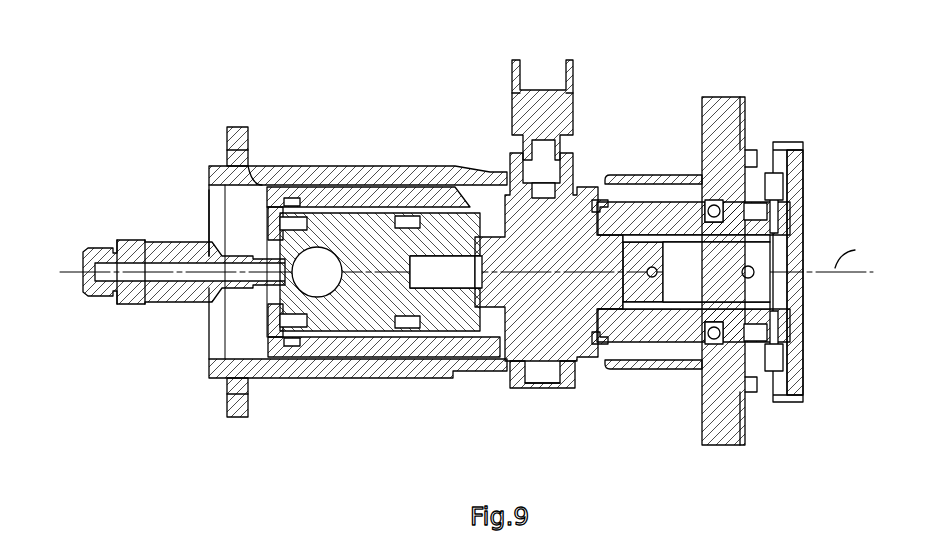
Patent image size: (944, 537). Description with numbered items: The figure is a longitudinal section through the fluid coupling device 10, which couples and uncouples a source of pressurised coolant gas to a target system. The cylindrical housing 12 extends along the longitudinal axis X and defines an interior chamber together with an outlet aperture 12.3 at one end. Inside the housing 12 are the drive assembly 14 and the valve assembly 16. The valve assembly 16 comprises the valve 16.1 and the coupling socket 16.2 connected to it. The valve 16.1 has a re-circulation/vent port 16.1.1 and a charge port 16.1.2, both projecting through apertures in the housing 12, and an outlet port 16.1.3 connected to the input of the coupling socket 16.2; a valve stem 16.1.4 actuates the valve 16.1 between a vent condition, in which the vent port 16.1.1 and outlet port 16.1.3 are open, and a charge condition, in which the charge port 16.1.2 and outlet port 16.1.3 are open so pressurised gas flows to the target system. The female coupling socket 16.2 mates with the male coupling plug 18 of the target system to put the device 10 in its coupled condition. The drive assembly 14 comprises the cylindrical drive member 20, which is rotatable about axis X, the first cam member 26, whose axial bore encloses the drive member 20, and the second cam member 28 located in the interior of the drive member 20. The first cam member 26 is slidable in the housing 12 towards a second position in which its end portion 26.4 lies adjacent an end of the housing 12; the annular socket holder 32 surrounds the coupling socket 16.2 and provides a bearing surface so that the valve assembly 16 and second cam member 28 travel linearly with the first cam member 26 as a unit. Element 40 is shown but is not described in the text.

The fluid coupling device 10 is at (805, 88).
The housing 12 is at (305, 378).
The outlet aperture 12.3 is at (203, 233).
The drive assembly 14 is at (243, 342).
The valve assembly 16 is at (483, 213).
The valve 16.1 is at (556, 195).
The re-circulation/vent port 16.1.1 is at (579, 70).
The charge port 16.1.2 is at (562, 391).
The outlet port 16.1.3 is at (500, 283).
The valve stem 16.1.4 is at (655, 280).
The coupling socket 16.2 is at (348, 235).
The male coupling plug 18 is at (132, 243).
The cylindrical drive member 20 is at (681, 205).
The first cam member 26 is at (400, 195).
The end portion 26.4 is at (261, 217).
The second cam member 28 is at (776, 212).
The socket holder 32 is at (380, 330).
The seal ring 40 is at (601, 205).